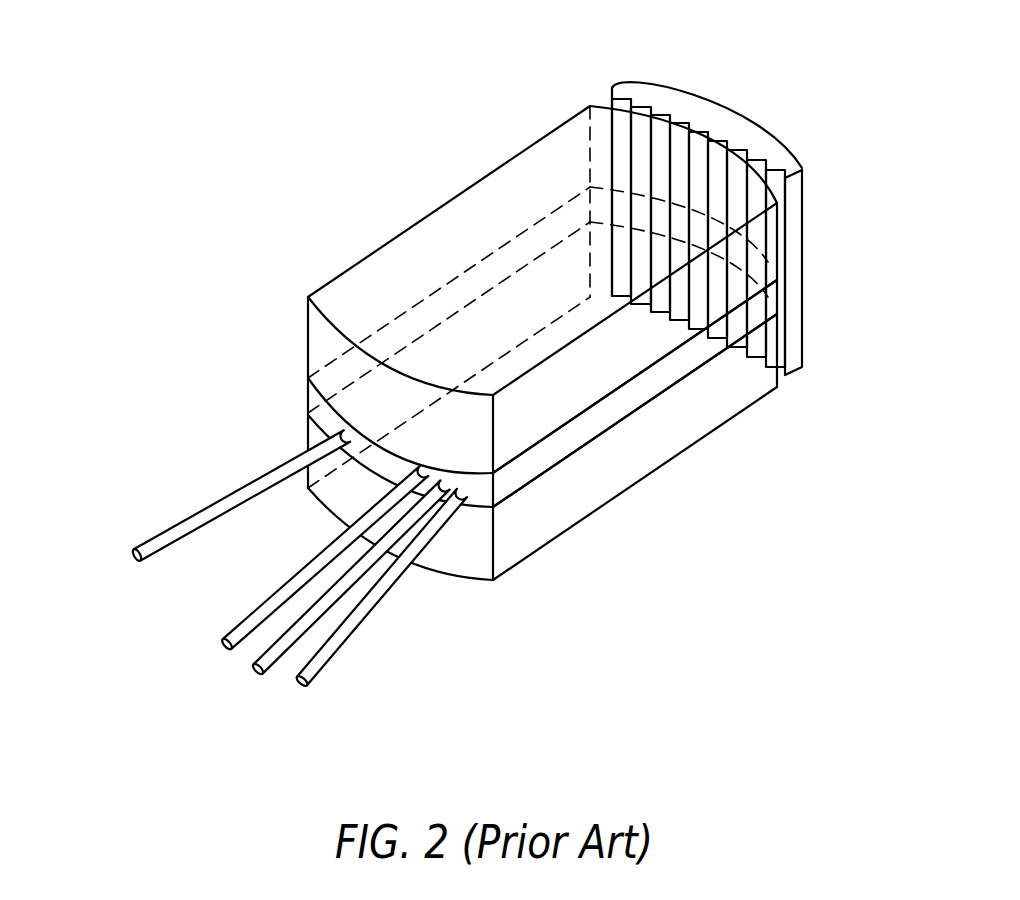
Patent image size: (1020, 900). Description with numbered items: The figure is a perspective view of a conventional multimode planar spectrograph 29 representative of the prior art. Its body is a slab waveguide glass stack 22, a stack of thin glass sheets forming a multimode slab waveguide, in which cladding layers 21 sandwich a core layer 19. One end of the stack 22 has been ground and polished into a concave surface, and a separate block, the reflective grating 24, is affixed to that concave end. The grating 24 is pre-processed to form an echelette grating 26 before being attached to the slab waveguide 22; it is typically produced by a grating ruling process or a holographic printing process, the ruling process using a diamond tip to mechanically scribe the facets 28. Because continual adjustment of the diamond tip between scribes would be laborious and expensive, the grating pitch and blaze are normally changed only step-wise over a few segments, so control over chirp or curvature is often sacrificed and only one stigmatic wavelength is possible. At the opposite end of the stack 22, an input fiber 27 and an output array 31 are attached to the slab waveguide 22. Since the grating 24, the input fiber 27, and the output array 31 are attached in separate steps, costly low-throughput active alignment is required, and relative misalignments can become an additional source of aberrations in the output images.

The core layer 19 is at (527, 468).
The cladding layers 21 is at (637, 338).
The slab waveguide glass stack 22 is at (516, 157).
The reflective grating 24 is at (788, 166).
The echelette grating 26 is at (700, 188).
The input fiber 27 is at (131, 553).
The facets 28 is at (700, 129).
The multimode planar spectrograph 29 is at (459, 364).
The output array 31 is at (208, 645).